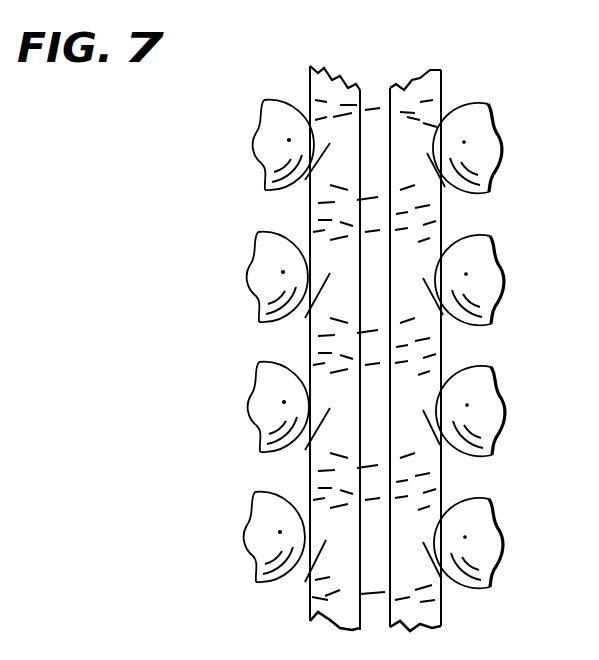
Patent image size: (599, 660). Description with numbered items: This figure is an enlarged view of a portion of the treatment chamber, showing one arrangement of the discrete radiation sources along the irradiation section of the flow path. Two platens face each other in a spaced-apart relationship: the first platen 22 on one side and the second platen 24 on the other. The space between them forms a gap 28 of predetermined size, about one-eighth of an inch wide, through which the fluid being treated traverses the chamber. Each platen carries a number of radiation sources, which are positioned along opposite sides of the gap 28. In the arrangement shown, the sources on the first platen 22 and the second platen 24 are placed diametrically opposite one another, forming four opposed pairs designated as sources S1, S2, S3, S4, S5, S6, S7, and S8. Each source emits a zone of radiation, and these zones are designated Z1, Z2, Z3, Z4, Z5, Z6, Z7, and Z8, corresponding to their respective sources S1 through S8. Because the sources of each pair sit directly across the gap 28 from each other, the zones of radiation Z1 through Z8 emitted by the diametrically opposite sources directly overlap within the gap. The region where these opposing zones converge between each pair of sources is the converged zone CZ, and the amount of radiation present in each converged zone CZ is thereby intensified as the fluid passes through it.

The first platen 22 is at (323, 82).
The second platen 24 is at (431, 89).
The gap 28 is at (374, 92).
The converged zone CZ is at (398, 160).
The radiation source S1 is at (484, 128).
The radiation source S2 is at (272, 127).
The radiation source S3 is at (484, 262).
The radiation source S4 is at (268, 265).
The radiation source S5 is at (486, 392).
The radiation source S6 is at (262, 396).
The radiation source S7 is at (478, 520).
The radiation source S8 is at (264, 528).
The zone of radiation Z1 is at (442, 185).
The zone of radiation Z2 is at (310, 172).
The zone of radiation Z3 is at (441, 312).
The zone of radiation Z4 is at (310, 308).
The zone of radiation Z5 is at (441, 442).
The zone of radiation Z6 is at (312, 442).
The zone of radiation Z7 is at (441, 576).
The zone of radiation Z8 is at (312, 572).